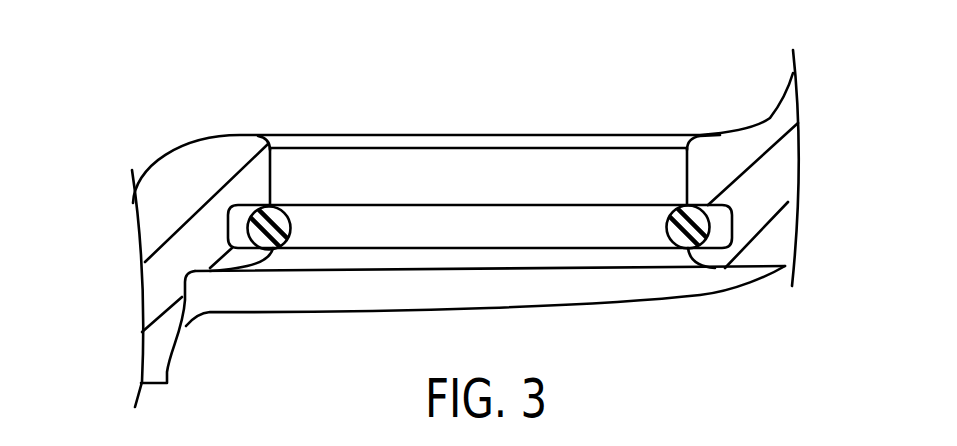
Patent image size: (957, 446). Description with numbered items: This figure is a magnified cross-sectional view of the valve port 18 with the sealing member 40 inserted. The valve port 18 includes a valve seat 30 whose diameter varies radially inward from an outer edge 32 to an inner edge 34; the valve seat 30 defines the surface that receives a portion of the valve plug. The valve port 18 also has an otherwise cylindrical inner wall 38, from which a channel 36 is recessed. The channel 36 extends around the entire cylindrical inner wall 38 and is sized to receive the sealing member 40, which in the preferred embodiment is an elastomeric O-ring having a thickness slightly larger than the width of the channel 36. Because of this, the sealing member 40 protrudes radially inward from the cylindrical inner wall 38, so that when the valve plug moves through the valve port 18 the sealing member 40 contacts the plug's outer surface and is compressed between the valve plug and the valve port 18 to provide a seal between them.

The valve port 18 is at (468, 187).
The valve seat 30 is at (257, 283).
The outer edge 32 is at (232, 135).
The inner edge 34 is at (264, 141).
The channel 36 is at (225, 223).
The cylindrical inner wall 38 is at (267, 182).
The sealing member 40 is at (666, 215).